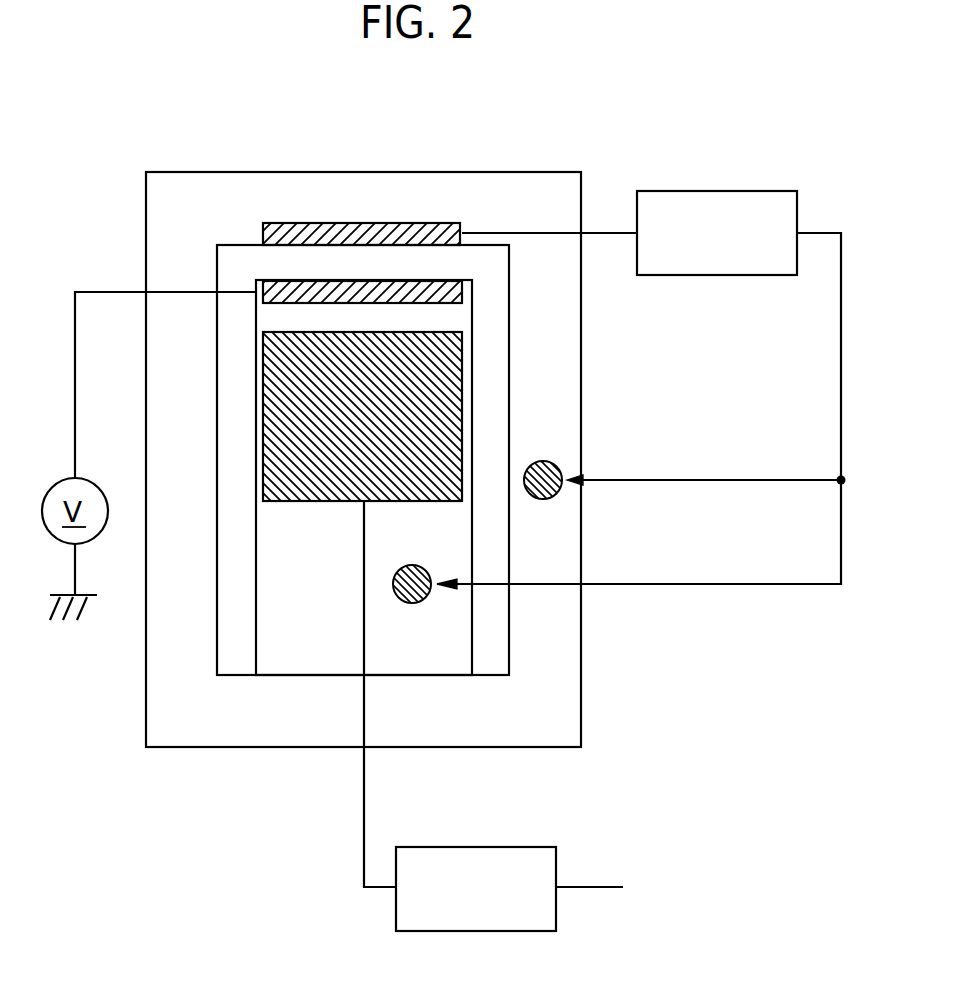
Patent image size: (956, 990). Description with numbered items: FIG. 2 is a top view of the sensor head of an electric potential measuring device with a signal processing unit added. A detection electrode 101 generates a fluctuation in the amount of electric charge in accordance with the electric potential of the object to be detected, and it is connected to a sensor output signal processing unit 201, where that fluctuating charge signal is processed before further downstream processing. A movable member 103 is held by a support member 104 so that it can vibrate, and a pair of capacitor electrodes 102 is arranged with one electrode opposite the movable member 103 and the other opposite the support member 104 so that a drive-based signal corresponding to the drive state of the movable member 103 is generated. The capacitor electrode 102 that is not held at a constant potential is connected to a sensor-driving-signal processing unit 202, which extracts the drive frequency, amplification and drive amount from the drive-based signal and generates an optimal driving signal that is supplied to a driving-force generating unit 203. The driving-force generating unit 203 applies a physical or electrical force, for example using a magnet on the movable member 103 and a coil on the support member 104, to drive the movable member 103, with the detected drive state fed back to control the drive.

The detection electrode 101 is at (438, 372).
The capacitor electrodes 102 is at (342, 292).
The movable member 103 is at (280, 580).
The support member 104 is at (485, 200).
The sensor output signal processing unit 201 is at (508, 860).
The sensor-driving-signal processing unit 202 is at (678, 202).
The driving-force generating unit 203 is at (542, 470).